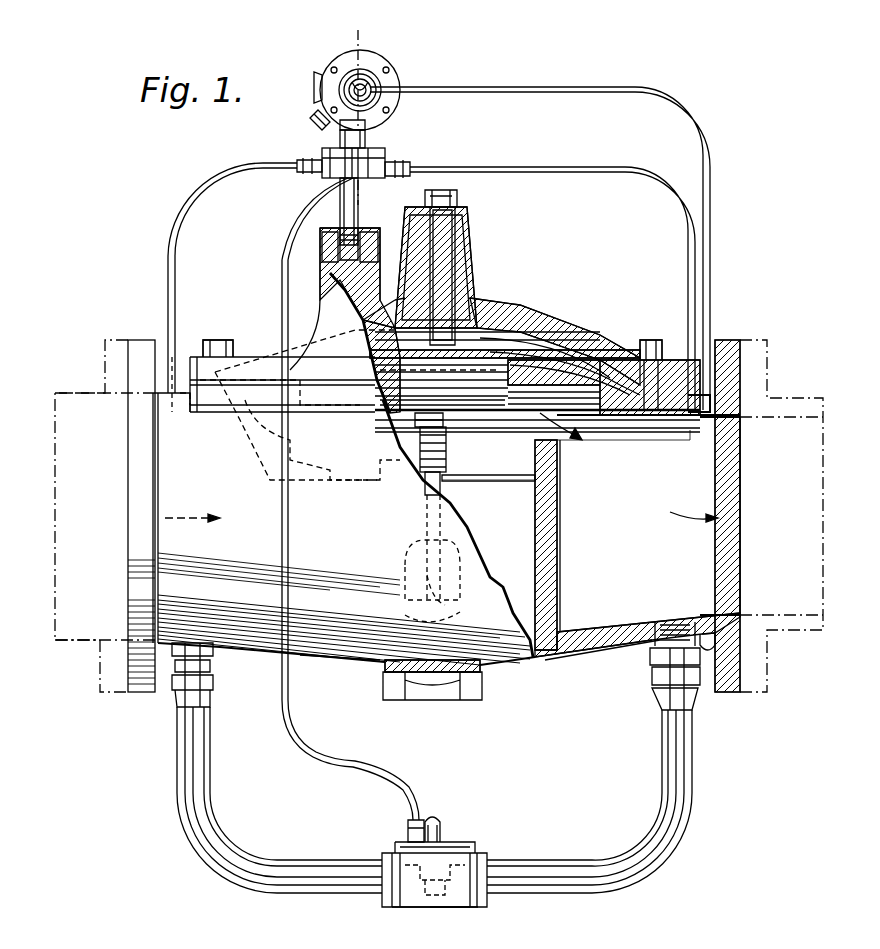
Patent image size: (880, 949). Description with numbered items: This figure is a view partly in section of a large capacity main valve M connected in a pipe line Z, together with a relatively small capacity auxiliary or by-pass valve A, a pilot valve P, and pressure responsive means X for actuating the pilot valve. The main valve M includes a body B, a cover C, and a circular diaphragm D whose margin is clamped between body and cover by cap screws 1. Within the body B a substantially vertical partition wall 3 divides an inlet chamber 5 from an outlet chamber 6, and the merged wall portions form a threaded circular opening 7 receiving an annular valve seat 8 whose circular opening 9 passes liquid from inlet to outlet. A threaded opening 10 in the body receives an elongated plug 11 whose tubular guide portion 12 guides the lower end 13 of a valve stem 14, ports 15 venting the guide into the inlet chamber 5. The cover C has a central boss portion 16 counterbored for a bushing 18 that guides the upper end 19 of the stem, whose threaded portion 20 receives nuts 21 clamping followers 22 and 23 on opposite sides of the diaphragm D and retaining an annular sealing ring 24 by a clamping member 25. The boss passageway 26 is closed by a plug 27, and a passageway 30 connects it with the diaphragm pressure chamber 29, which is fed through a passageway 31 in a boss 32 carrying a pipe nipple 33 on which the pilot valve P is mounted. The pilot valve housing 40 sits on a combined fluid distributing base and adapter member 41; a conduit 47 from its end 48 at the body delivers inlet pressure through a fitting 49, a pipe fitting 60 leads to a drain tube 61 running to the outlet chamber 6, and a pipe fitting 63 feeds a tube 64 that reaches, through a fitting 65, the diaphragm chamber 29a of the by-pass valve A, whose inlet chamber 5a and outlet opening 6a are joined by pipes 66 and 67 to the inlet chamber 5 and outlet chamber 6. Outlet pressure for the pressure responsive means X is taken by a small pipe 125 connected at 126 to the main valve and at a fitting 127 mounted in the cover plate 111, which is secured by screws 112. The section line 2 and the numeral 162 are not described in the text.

The cap screws 1 is at (222, 340).
The section line 2- 2 is at (356, 27).
The partition wall 3 is at (562, 540).
The inlet chamber 5 is at (250, 640).
The outlet chamber 6 is at (742, 590).
The circular opening 7 is at (540, 485).
The annular valve seat 8 is at (375, 482).
The circular opening 9 is at (515, 480).
The threaded opening 10 is at (482, 675).
The elongated plug 11 is at (438, 690).
The tubular guide portion 12 is at (404, 590).
The lower end of valve stem 13 is at (450, 590).
The valve stem 14 is at (445, 480).
The ports 15 is at (410, 635).
The central boss portion 16 is at (472, 268).
The bushing 18 is at (478, 302).
The upper end of valve stem 19 is at (468, 240).
The threaded portion 20 is at (418, 450).
The nuts 21 is at (478, 422).
The follower 22 is at (556, 335).
The follower 23 is at (575, 385).
The annular sealing ring 24 is at (540, 385).
The clamping member 25 is at (385, 410).
The passageway 26 is at (460, 222).
The plug 27 is at (458, 195).
The diaphragm pressure chamber 29 is at (592, 350).
The passageway 30 is at (388, 290).
The passageway 31 is at (322, 252).
The boss 32 is at (380, 235).
The pipe nipple 33 is at (358, 205).
The pilot valve housing 40 is at (367, 128).
The combined fluid distributing base and adapter member 41 is at (330, 175).
The conduit 47 is at (166, 265).
The conduit end 48 is at (182, 412).
The fitting 49 is at (300, 160).
The pipe fitting 60 is at (395, 164).
The drain tube 61 is at (652, 172).
The pipe fitting 63 is at (366, 143).
The tube 64 is at (282, 230).
The fitting 65 is at (406, 824).
The pipe 66 is at (205, 848).
The pipe 67 is at (694, 815).
The cover plate 111 is at (338, 60).
The screws 112 is at (380, 100).
The pipe 125 is at (712, 190).
The connection 126 is at (708, 425).
The fitting 127 is at (368, 82).
The outlet port 162 is at (688, 425).
The diaphragm chamber of by-pass valve 29a is at (445, 838).
The inlet chamber of by-pass valve 5a is at (400, 908).
The outlet opening of by-pass valve 6a is at (462, 908).
The auxiliary or by-pass valve A is at (260, 450).
The body B is at (350, 664).
The cover C is at (578, 345).
The circular diaphragm D is at (618, 370).
The main valve M is at (595, 660).
The pilot valve P is at (312, 128).
The pressure responsive means X is at (400, 78).
The pipe line Z is at (790, 395).